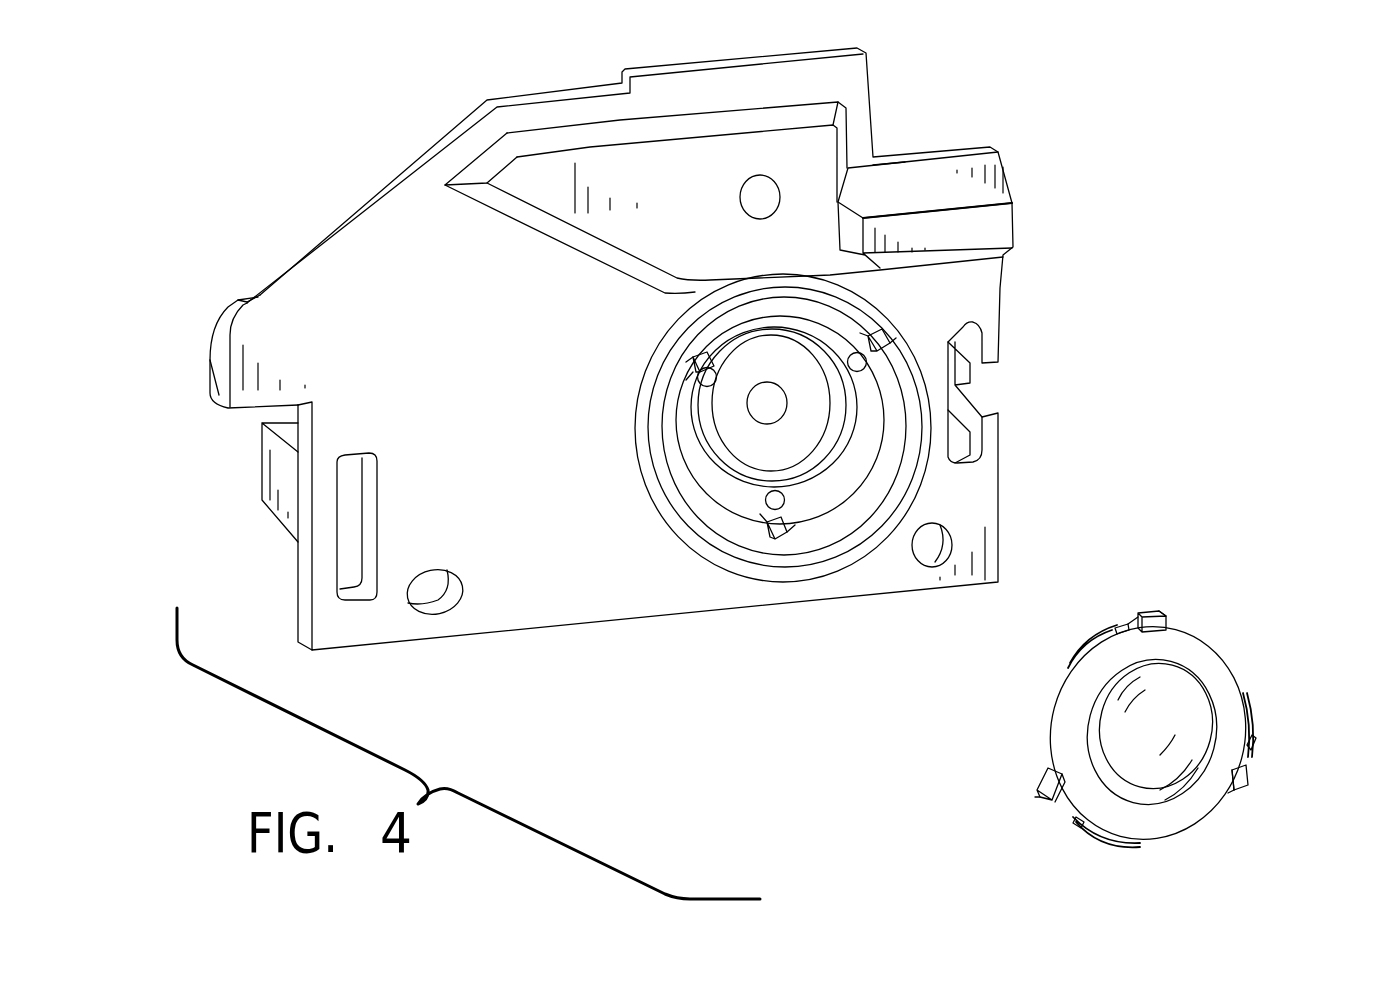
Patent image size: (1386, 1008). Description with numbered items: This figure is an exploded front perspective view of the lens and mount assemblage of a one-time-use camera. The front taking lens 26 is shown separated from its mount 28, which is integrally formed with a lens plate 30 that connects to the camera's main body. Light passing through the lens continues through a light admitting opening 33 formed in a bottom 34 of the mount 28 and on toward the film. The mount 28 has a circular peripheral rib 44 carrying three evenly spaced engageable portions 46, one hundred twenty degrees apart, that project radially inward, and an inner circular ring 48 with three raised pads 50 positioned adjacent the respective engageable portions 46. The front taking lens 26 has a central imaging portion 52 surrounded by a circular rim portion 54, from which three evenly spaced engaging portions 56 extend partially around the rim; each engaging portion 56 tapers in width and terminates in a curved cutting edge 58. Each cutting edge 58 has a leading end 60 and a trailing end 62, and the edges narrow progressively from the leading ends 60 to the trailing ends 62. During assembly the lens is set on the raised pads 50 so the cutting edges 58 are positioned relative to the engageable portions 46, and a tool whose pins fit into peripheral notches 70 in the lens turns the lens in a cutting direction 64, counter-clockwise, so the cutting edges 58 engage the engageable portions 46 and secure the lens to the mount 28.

The front taking lens 26 is at (1208, 637).
The mount 28 is at (637, 411).
The lens plate 30 is at (510, 613).
The light admitting opening 33 is at (773, 392).
The bottom 34 is at (800, 430).
The circular peripheral rib 44 is at (640, 420).
The engageable portions 46 is at (690, 372).
The inner circular ring 48 is at (727, 480).
The raised pads 50 is at (700, 363).
The central imaging portion 52 is at (1097, 730).
The circular rim portion 54 is at (1203, 797).
The engaging portions 56 is at (1068, 647).
The cutting edges 58 is at (1073, 673).
The leading end 60 is at (1050, 708).
The trailing end 62 is at (1120, 627).
The cutting direction 64 is at (1180, 684).
The peripheral notches 70 is at (1127, 618).